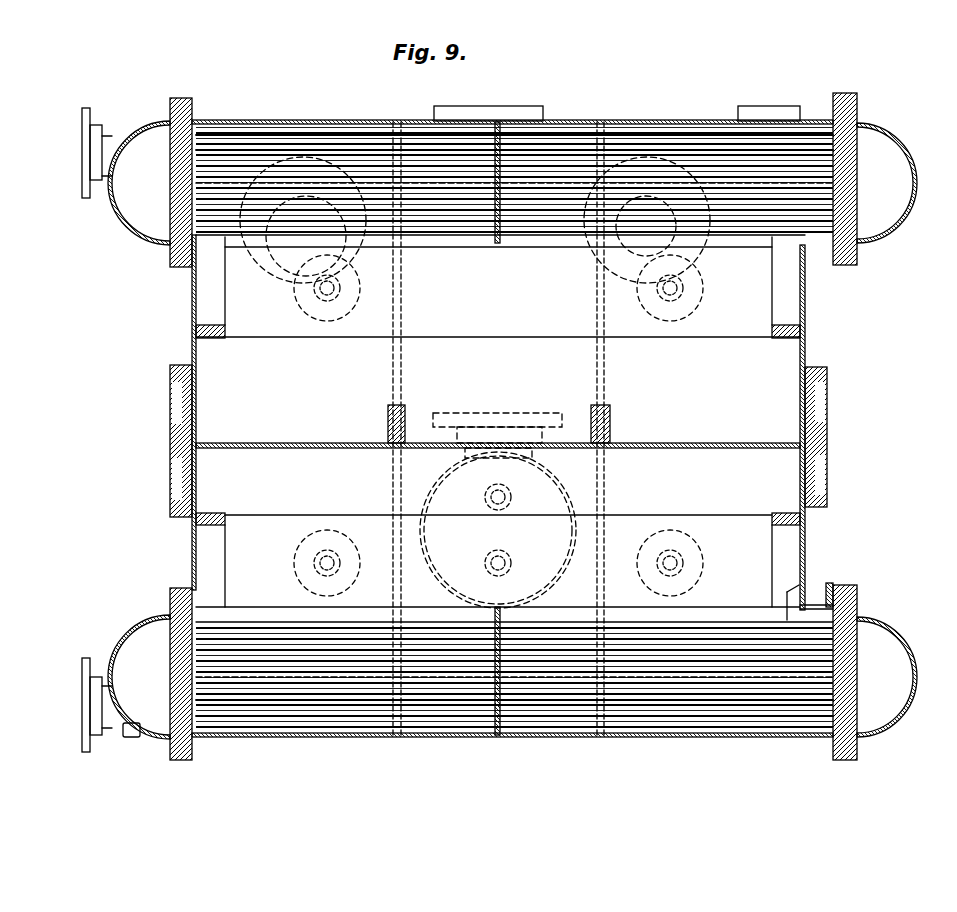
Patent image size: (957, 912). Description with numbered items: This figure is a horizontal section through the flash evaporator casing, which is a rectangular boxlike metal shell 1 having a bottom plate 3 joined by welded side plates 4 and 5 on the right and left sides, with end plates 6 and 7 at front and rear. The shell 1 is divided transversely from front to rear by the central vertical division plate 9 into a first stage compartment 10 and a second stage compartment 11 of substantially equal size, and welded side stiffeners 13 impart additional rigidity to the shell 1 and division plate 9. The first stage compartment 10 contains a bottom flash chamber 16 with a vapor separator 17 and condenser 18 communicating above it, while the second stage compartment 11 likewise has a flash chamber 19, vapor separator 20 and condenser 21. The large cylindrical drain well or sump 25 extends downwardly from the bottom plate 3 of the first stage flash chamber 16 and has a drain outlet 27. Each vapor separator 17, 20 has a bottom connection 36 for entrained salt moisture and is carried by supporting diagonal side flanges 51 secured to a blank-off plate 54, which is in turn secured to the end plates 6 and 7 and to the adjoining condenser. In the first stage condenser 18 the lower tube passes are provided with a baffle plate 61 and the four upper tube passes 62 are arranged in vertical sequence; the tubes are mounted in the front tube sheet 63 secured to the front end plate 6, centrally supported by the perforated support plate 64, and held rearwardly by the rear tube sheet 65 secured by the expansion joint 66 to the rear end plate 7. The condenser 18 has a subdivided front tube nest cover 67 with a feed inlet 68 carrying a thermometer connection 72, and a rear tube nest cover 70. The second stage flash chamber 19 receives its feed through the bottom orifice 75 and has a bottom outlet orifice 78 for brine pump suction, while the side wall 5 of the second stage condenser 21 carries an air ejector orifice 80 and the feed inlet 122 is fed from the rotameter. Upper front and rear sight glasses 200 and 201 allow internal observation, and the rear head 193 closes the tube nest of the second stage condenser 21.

The metal shell 1 is at (583, 740).
The bottom plate 3 is at (191, 518).
The side plate 4 is at (425, 740).
The side plate 5 is at (335, 124).
The end plate 6 is at (191, 300).
The end plate 7 is at (806, 300).
The central vertical division plate 9 is at (513, 445).
The first stage compartment 10 is at (683, 715).
The second stage compartment 11 is at (660, 135).
The side stiffener 13 is at (590, 410).
The first stage flash chamber 16 is at (806, 520).
The vapor separator 17 is at (235, 558).
The first stage condenser 18 is at (778, 718).
The second stage flash chamber 19 is at (222, 362).
The vapor separator 20 is at (360, 337).
The second stage condenser 21 is at (245, 150).
The drain well or sump 25 is at (575, 510).
The drain outlet 27 is at (493, 458).
The bottom connection 36 is at (683, 298).
The diagonal side flanges 51 is at (222, 338).
The blank-off plate 54 is at (294, 288).
The baffle plate 61 is at (290, 705).
The upper tube passes 62 is at (352, 718).
The front tube sheet 63 is at (185, 655).
The perforated support plate 64 is at (494, 715).
The rear tube sheet 65 is at (850, 700).
The expansion joint 66 is at (828, 755).
The front tube nest cover 67 is at (128, 636).
The feed inlet 68 is at (86, 717).
The rear tube nest cover 70 is at (906, 645).
The thermometer connection 72 is at (130, 738).
The bottom orifice 75 is at (345, 258).
The bottom outlet orifice 78 is at (598, 250).
The air ejector orifice 80 is at (505, 112).
The feed inlet 122 is at (86, 160).
The upper left head dome 193 is at (125, 212).
The upper front sight glass 200 is at (177, 405).
The upper rear sight glass 201 is at (820, 405).